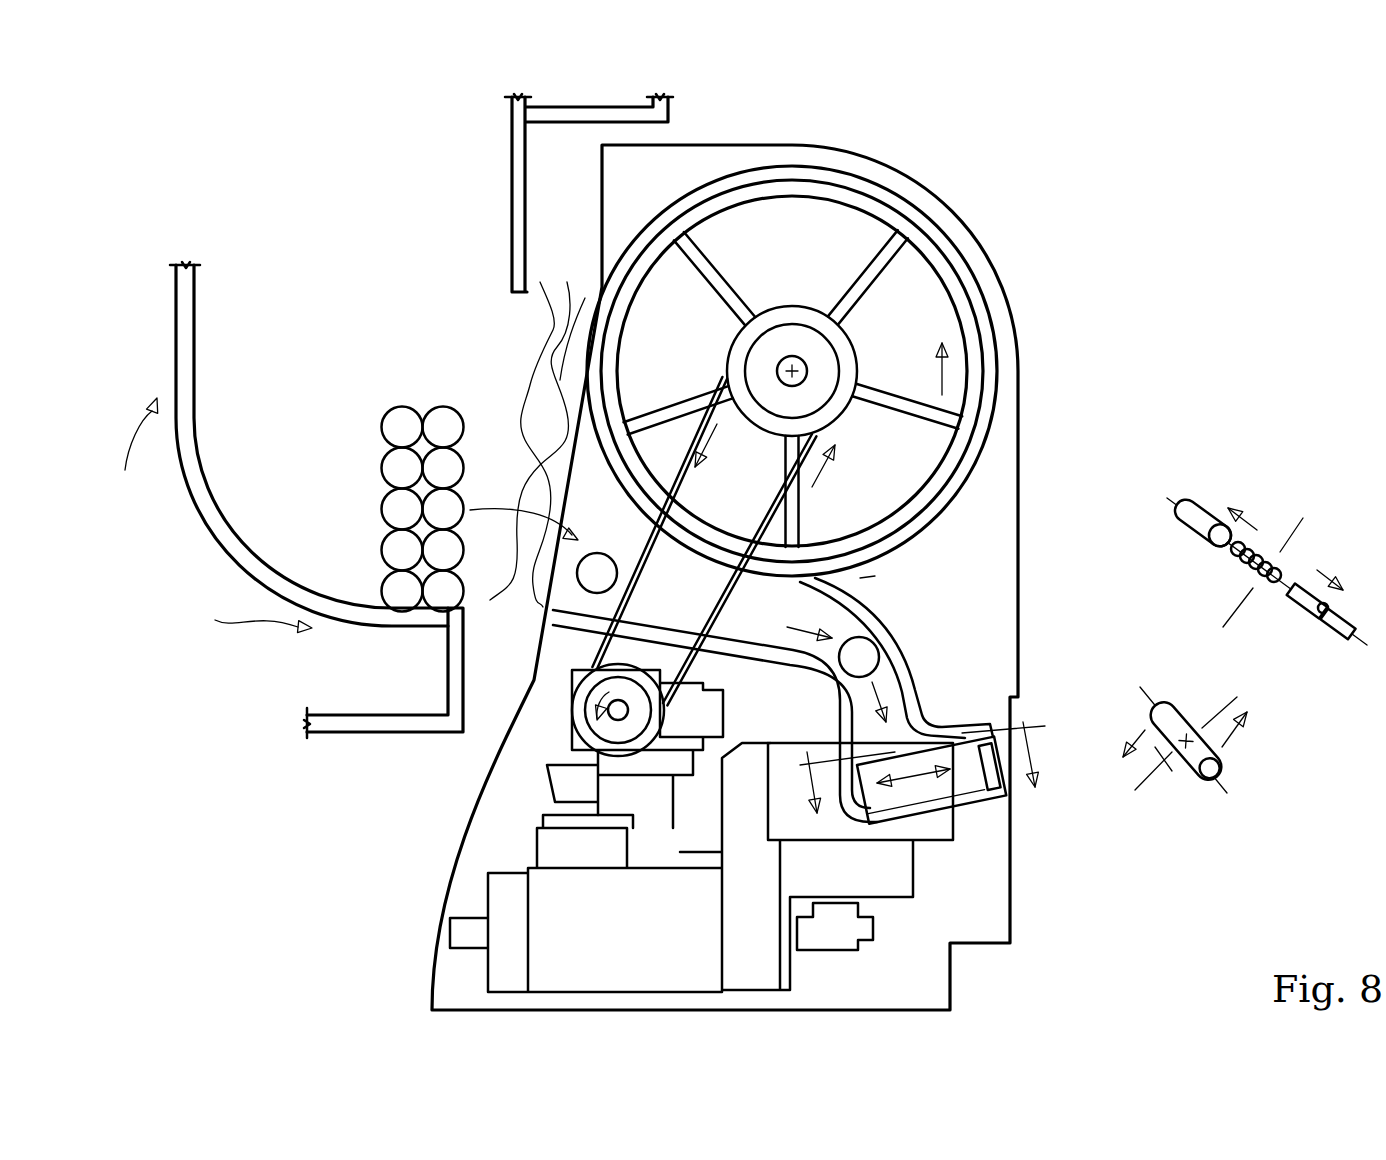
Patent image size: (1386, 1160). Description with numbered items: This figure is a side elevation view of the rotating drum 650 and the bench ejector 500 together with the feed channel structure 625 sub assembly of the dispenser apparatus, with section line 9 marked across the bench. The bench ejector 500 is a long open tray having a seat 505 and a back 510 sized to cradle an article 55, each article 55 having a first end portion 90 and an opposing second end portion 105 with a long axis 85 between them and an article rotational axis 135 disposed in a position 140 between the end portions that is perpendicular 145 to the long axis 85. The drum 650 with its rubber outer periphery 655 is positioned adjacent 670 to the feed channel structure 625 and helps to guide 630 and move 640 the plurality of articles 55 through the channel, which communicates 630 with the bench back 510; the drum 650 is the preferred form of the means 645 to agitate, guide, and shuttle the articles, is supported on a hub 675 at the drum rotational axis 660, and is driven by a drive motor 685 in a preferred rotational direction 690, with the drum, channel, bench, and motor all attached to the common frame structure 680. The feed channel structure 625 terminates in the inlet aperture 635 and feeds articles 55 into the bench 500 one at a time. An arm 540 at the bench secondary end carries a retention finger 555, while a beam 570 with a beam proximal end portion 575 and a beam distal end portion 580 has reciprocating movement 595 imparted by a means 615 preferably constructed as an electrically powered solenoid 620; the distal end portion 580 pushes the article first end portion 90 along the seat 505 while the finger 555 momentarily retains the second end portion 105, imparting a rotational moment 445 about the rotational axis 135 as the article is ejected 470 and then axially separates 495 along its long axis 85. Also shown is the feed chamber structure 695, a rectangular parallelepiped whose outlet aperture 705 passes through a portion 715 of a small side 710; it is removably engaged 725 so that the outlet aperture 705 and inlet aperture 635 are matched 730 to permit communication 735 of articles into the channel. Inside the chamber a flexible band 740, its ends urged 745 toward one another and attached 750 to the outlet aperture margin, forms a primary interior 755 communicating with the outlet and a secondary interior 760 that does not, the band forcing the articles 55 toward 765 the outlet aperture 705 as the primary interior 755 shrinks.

The section line 9- 9 is at (922, 780).
The article 55 is at (912, 660).
The long axis 85 is at (1231, 652).
The first end portion 90 is at (1231, 652).
The second end portion 105 is at (1231, 652).
The article rotational axis 135 is at (1231, 652).
The position of rotational axis 140 is at (1231, 652).
The perpendicular relationship 145 is at (1287, 690).
The rotational moment movement 445 is at (1231, 652).
The ejecting 470 is at (1231, 652).
The axial separation 495 is at (1231, 652).
The bench ejector 500 is at (978, 788).
The seat 505 is at (978, 788).
The back 510 is at (843, 790).
The arm 540 is at (978, 788).
The finger 555 is at (963, 716).
The beam 570 is at (676, 625).
The beam proximal end portion 575 is at (963, 800).
The beam distal end portion 580 is at (869, 874).
The reciprocating movement 595 is at (869, 874).
The means for imparting reciprocating movement 615 is at (610, 867).
The electrically powered solenoid 620 is at (610, 867).
The feed channel structure 625 is at (826, 694).
The communication 630 is at (735, 556).
The inlet aperture 635 is at (520, 420).
The movement of articles 640 is at (735, 556).
The means to agitate, guide, and shuttle 645 is at (850, 342).
The rotating drum 650 is at (850, 342).
The rubber outer periphery 655 is at (858, 152).
The drum rotational axis 660 is at (899, 326).
The adjacent positioning 670 is at (870, 578).
The hub 675 is at (806, 358).
The frame structure 680 is at (740, 160).
The drive motor 685 is at (573, 737).
The rotational direction 690 is at (946, 373).
The feed chamber structure 695 is at (467, 431).
The outlet aperture 705 is at (470, 391).
The small side 710 is at (467, 431).
The portion of small side 715 is at (527, 157).
The removable engagement 725 is at (467, 431).
The matching of apertures 730 is at (470, 391).
The communication of articles 735 is at (439, 448).
The flexible band 740 is at (284, 444).
The urging of band ends 745 is at (204, 470).
The band end attachment 750 is at (488, 640).
The primary interior 755 is at (220, 540).
The secondary interior 760 is at (420, 673).
The forcing toward outlet 765 is at (490, 500).